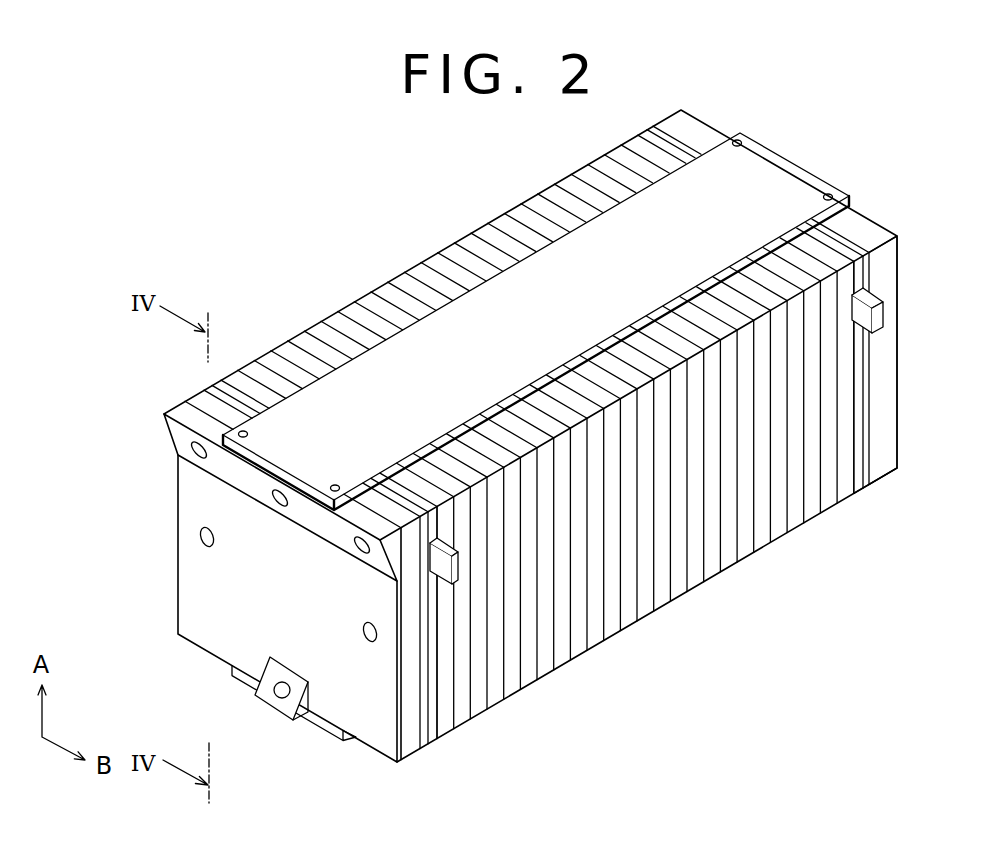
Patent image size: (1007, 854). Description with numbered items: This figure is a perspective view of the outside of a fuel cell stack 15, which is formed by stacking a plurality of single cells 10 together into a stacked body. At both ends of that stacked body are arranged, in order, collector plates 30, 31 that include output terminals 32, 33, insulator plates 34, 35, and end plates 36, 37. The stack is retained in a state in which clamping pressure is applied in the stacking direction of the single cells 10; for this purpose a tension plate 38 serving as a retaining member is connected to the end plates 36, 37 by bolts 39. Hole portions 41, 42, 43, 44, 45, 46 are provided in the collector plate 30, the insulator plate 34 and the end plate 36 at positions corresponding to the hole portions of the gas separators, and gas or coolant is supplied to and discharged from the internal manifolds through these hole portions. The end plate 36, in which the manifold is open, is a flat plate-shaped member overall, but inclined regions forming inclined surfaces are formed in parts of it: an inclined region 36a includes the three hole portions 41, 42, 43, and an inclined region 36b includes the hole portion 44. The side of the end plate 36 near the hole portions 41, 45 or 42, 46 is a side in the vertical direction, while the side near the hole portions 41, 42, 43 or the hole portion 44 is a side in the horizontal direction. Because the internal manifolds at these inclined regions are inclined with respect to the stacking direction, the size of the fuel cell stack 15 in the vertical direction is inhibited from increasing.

The fuel cell stack 15 is at (385, 205).
The single cell 10 is at (733, 567).
The collector plate 30 is at (434, 742).
The collector plate 31 is at (865, 483).
The output terminal 32 is at (443, 585).
The output terminal 33 is at (870, 318).
The insulator plate 34 is at (421, 757).
The insulator plate 35 is at (867, 488).
The end plate 36 is at (378, 745).
The inclined region 36a is at (232, 477).
The inclined region 36b is at (262, 697).
The end plate 37 is at (888, 447).
The tension plate 38 is at (778, 170).
The bolt 39 is at (244, 428).
The hole portion 41 is at (190, 449).
The hole portion 42 is at (360, 554).
The hole portion 43 is at (275, 507).
The hole portion 44 is at (280, 698).
The hole portion 45 is at (200, 541).
The hole portion 46 is at (369, 643).